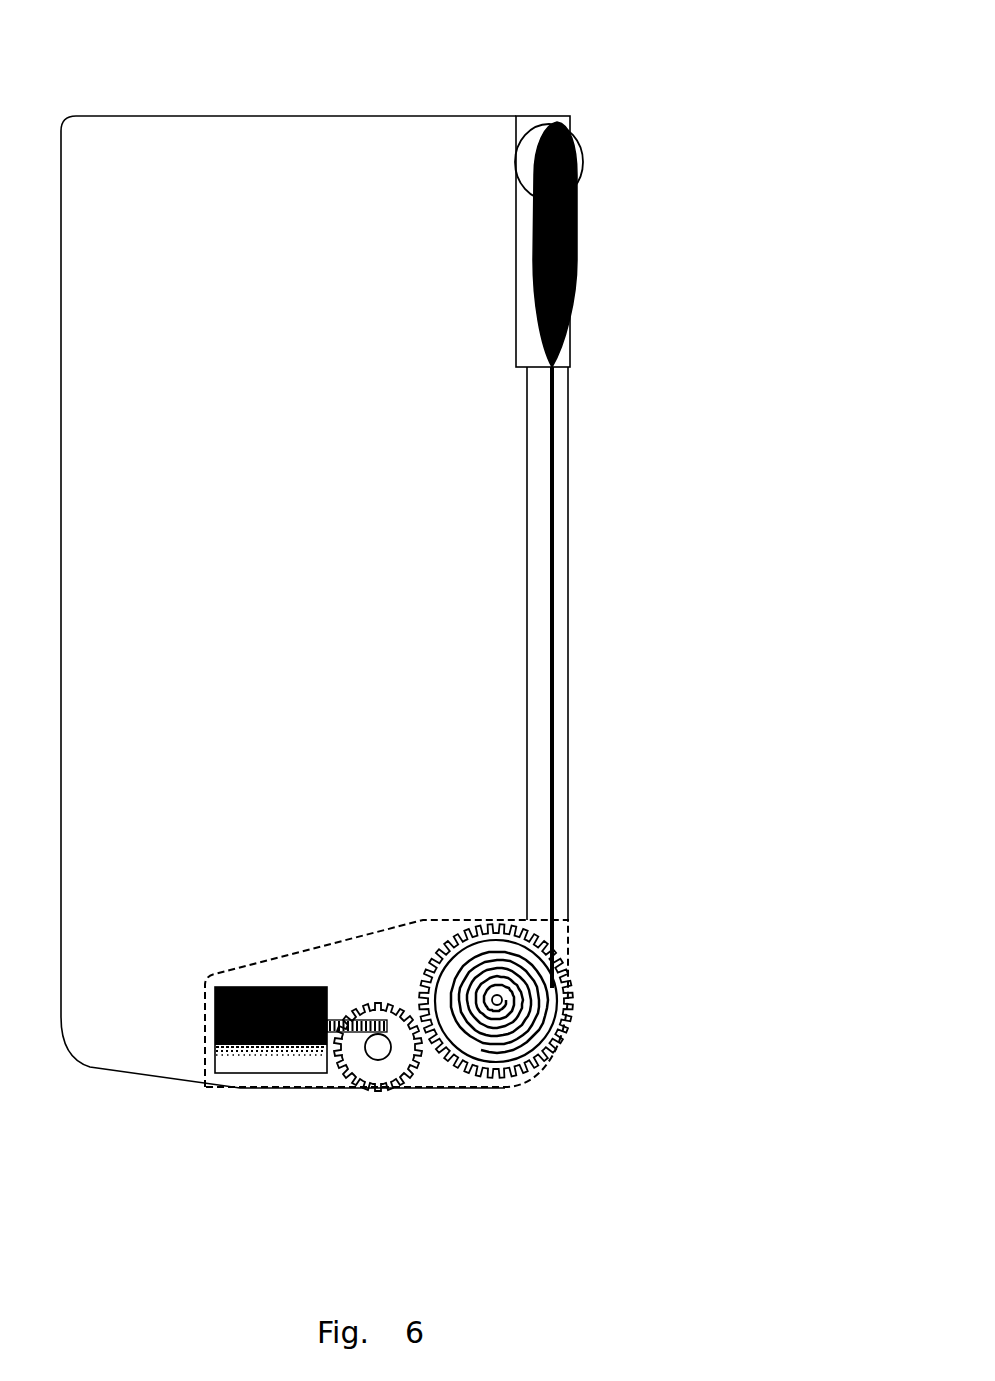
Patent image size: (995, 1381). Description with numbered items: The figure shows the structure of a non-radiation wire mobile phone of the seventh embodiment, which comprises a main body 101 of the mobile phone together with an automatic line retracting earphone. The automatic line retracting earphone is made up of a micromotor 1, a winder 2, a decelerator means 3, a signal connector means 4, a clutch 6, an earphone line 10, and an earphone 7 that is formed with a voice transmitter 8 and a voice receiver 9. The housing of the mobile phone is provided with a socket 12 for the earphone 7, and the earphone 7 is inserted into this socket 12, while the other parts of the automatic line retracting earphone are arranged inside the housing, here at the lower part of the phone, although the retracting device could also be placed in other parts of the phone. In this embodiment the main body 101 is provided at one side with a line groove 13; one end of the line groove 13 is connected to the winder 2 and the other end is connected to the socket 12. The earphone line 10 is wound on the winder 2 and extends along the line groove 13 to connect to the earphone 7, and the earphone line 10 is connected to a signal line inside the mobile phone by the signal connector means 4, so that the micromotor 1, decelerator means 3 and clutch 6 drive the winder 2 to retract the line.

The main body 101 is at (375, 169).
The socket 12 is at (560, 118).
The voice receiver 9 is at (575, 193).
The earphone 7 is at (573, 313).
The voice transmitter 8 is at (568, 377).
The line groove 13 is at (528, 723).
The earphone line 10 is at (550, 877).
The clutch 6 is at (543, 973).
The signal connector means 4 is at (553, 1038).
The winder 2 is at (515, 1075).
The decelerator means 3 is at (442, 1055).
The micromotor 1 is at (248, 1053).